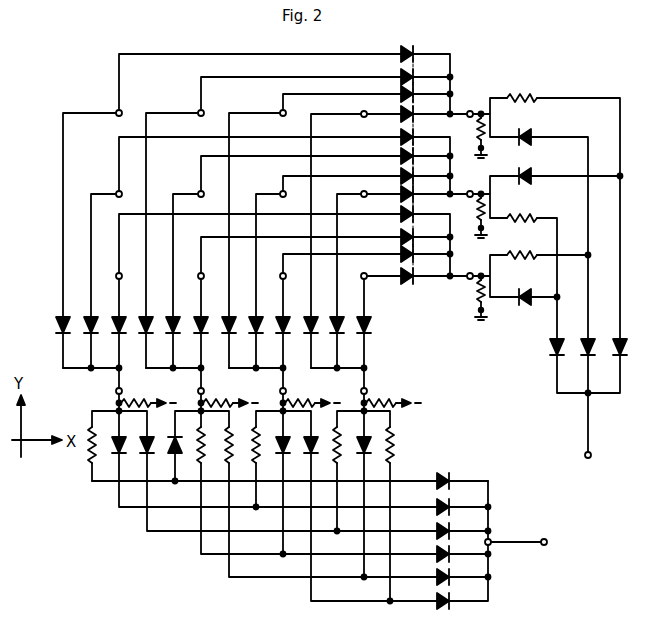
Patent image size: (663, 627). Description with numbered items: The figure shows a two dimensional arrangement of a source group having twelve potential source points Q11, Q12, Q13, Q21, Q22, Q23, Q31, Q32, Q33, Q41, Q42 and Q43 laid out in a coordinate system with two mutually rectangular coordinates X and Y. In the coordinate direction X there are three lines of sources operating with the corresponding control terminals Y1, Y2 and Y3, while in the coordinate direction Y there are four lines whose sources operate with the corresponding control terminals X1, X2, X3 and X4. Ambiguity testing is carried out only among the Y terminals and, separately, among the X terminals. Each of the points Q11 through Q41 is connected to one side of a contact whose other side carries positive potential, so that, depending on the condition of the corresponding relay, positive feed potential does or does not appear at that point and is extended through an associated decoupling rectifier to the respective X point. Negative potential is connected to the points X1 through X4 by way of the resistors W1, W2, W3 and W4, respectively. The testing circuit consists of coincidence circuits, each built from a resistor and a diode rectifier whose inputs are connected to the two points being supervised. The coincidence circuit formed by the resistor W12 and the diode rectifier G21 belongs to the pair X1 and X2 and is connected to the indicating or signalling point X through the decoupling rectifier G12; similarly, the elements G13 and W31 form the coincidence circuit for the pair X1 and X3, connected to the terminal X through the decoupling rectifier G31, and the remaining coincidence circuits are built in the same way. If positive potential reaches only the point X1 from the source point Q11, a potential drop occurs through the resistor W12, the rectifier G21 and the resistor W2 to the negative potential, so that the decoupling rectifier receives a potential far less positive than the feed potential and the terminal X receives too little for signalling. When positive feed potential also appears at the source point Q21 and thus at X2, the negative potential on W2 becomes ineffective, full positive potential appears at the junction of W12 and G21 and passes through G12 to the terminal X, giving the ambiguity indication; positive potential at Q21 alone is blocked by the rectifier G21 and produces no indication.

The source point Q11 is at (251, 297).
The source point Q12 is at (248, 248).
The source point Q13 is at (234, 207).
The source point Q21 is at (292, 308).
The source point Q22 is at (289, 258).
The source point Q23 is at (276, 218).
The source point Q31 is at (334, 317).
The source point Q32 is at (331, 268).
The source point Q33 is at (317, 227).
The source point Q41 is at (374, 322).
The source point Q42 is at (371, 271).
The source point Q43 is at (358, 231).
The control terminal Y1 is at (526, 285).
The control terminal Y2 is at (542, 253).
The control terminal Y3 is at (540, 216).
The control terminal X1 is at (111, 393).
The control terminal X2 is at (193, 393).
The control terminal X3 is at (275, 393).
The control terminal X4 is at (356, 393).
The resistor W1 is at (148, 395).
The resistor W2 is at (230, 395).
The resistor W3 is at (312, 395).
The resistor W4 is at (393, 395).
The resistor W12 is at (90, 452).
The resistor W31 is at (256, 456).
The diode rectifier G13 is at (132, 452).
The diode rectifier G21 is at (175, 454).
The decoupling rectifier G12 is at (462, 474).
The decoupling rectifier G31 is at (445, 506).
The indicating or signalling terminal X is at (523, 543).
The coordinate direction Y is at (588, 409).